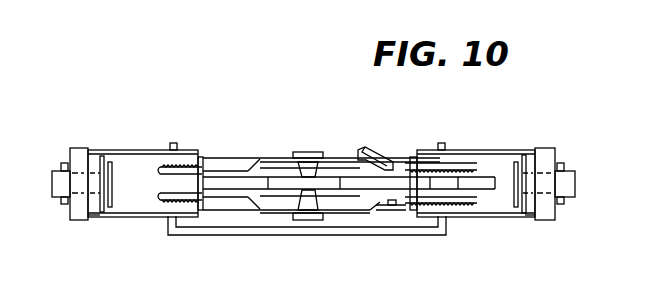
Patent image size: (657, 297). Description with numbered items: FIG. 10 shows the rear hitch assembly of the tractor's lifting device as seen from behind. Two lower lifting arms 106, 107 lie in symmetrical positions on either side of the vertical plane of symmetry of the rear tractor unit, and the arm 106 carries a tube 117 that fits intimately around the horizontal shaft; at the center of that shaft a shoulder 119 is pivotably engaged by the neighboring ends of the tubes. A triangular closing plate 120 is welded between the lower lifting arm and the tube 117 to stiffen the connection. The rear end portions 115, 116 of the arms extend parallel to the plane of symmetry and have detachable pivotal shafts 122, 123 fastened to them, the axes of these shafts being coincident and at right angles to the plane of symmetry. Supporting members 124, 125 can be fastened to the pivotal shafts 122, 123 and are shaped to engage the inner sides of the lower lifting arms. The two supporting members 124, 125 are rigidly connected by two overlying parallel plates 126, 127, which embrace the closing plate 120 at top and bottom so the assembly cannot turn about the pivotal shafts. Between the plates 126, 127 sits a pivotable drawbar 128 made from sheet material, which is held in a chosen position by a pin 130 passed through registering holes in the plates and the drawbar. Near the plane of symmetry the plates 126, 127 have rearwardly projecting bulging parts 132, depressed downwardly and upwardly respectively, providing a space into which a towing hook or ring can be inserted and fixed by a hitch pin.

The lower lifting arm 106 is at (92, 219).
The lower lifting arm 107 is at (533, 221).
The end portion 115 is at (72, 151).
The end portion 116 is at (563, 133).
The tube 117 is at (225, 157).
The shoulder 119 is at (312, 152).
The triangular closing plate 120 is at (233, 185).
The pivotal shaft 122 is at (52, 174).
The pivotal shaft 123 is at (578, 168).
The supporting member 124 is at (130, 166).
The supporting member 125 is at (502, 153).
The plate 126 is at (397, 206).
The plate 127 is at (447, 165).
The drawbar 128 is at (352, 196).
The pin 130 is at (378, 152).
The bulging part 132 is at (272, 155).